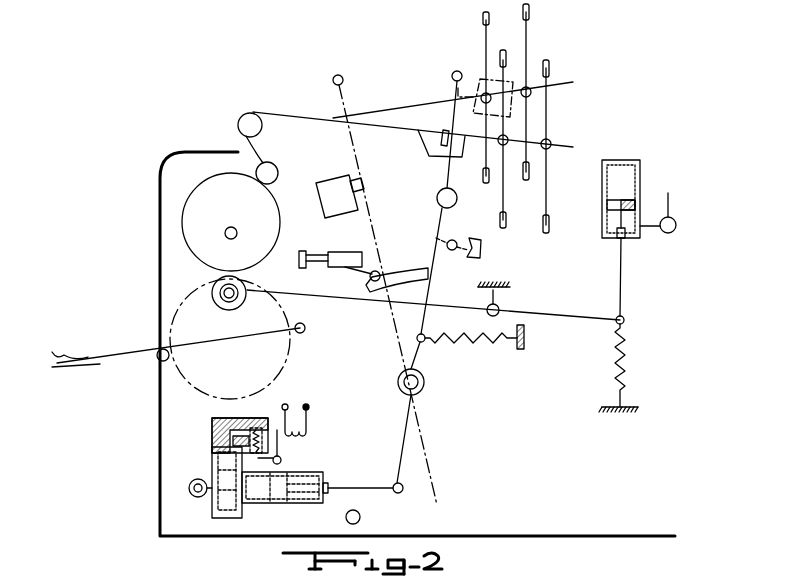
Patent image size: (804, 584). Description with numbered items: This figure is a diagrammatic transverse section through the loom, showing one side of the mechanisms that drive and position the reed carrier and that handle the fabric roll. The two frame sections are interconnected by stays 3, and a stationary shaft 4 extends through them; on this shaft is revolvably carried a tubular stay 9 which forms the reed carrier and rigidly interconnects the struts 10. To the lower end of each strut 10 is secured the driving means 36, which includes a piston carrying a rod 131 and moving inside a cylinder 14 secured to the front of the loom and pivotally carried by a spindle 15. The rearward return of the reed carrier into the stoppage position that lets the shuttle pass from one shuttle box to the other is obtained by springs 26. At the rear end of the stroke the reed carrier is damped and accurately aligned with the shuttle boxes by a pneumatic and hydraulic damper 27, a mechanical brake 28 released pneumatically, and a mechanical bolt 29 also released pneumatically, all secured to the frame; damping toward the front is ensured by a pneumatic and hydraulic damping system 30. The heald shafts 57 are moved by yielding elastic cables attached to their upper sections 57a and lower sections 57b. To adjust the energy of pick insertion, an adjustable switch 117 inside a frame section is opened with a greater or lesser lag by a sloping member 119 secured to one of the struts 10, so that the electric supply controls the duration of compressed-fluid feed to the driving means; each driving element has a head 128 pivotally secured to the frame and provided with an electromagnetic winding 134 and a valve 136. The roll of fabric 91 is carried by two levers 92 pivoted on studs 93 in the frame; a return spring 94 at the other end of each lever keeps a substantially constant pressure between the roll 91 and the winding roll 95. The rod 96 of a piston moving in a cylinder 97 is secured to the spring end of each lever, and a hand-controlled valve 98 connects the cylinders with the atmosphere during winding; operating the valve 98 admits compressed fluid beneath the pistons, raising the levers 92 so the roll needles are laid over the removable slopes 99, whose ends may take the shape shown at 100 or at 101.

The stays 3 is at (360, 513).
The stationary shaft 4 is at (424, 379).
The tubular stay 9 is at (422, 390).
The strut 10 is at (435, 221).
The cylinder 14 is at (265, 503).
The spindle 15 is at (189, 486).
The springs 26 is at (467, 344).
The pneumatic and hydraulic damper 27 is at (475, 76).
The mechanical brake 28 is at (437, 201).
The mechanical bolt 29 is at (480, 254).
The pneumatic and hydraulic damping system 30 is at (346, 199).
The driving means 36 is at (286, 473).
The heald shafts 57 is at (549, 108).
The upper sections of the heald shafts 57a is at (481, 18).
The lower sections of the heald shafts 57b is at (480, 182).
The roll of fabric 91 is at (246, 290).
The levers 92 is at (344, 298).
The studs 93 is at (499, 305).
The return spring 94 is at (620, 356).
The winding roll 95 is at (241, 208).
The piston rod 96 is at (620, 278).
The cylinder 97 is at (637, 161).
The hand-controlled valve 98 is at (676, 223).
The removable slopes 99 is at (128, 351).
The slope end shape 100 is at (58, 351).
The slope end shape 101 is at (85, 369).
The switch 117 is at (348, 251).
The sloping member 119 is at (420, 270).
The head 128 is at (212, 458).
The piston rod 131 is at (360, 488).
The electromagnetic winding 134 is at (308, 430).
The valve 136 is at (262, 442).